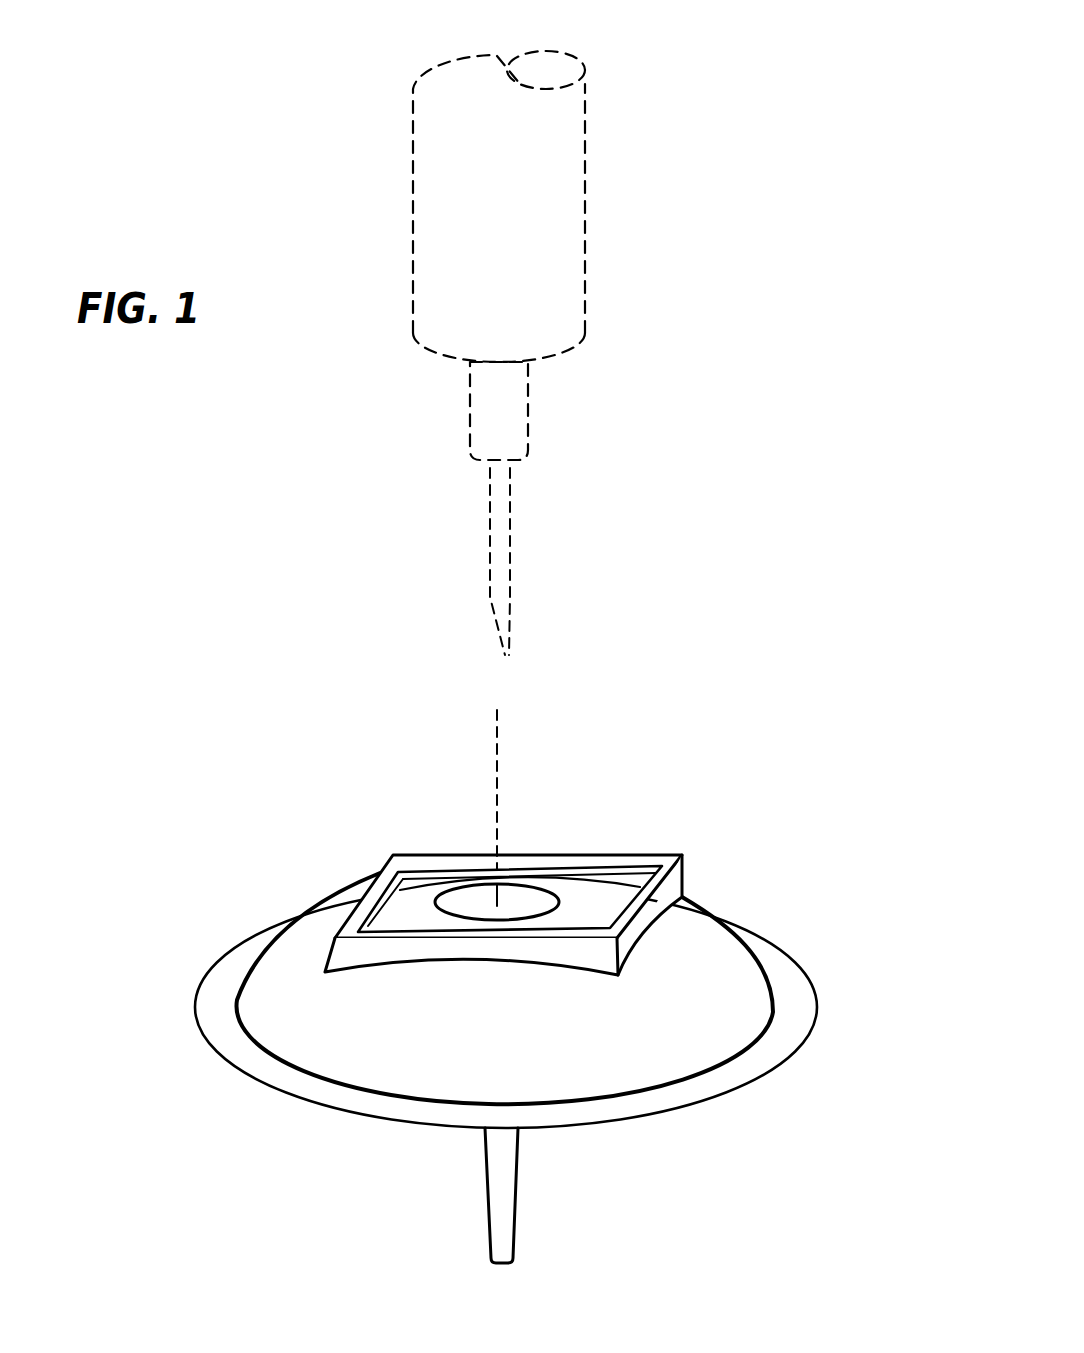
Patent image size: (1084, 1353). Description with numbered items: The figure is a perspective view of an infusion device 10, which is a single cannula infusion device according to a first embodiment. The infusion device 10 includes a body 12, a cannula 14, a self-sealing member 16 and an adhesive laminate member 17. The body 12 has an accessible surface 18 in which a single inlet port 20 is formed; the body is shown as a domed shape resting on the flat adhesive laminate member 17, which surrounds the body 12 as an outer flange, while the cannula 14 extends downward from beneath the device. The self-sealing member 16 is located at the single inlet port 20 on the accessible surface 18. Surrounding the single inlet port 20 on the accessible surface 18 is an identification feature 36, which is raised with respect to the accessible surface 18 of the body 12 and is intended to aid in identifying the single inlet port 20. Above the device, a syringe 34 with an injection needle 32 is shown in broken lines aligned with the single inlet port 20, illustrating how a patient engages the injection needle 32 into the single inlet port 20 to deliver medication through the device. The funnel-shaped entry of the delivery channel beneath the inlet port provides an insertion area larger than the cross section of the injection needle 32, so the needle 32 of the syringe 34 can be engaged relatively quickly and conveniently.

The infusion device 10 is at (272, 778).
The body 12 is at (614, 862).
The cannula 14 is at (497, 1203).
The self-sealing member 16 is at (513, 898).
The adhesive laminate member 17 is at (763, 1060).
The accessible surface 18 is at (308, 946).
The single inlet port 20 is at (480, 910).
The injection needle 32 is at (503, 522).
The syringe 34 is at (598, 235).
The identification feature 36 is at (675, 872).